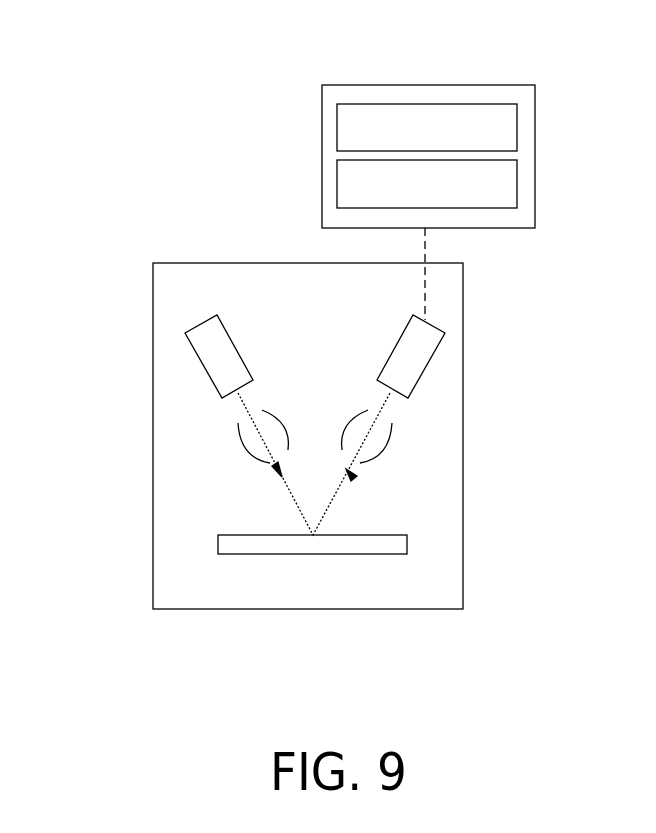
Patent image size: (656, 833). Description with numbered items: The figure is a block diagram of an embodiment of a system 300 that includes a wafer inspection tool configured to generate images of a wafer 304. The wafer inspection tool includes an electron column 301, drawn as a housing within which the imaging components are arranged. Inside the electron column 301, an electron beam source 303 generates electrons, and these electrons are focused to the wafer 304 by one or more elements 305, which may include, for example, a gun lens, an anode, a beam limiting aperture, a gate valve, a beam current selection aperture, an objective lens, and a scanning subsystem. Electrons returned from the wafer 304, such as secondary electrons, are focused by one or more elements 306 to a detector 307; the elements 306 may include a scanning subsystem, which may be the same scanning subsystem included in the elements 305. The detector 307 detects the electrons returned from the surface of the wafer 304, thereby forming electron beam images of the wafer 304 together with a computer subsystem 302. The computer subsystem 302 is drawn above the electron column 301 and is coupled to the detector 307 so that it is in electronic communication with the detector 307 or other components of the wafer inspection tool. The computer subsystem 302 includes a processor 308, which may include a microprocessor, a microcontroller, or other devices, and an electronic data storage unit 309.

The system 300 is at (157, 105).
The electron column 301 is at (290, 263).
The computer subsystem 302 is at (428, 85).
The electron beam source 303 is at (224, 328).
The wafer 304 is at (360, 535).
The elements 305 is at (250, 457).
The elements 306 is at (380, 457).
The detector 307 is at (403, 330).
The processor 308 is at (408, 138).
The electronic data storage unit 309 is at (408, 195).